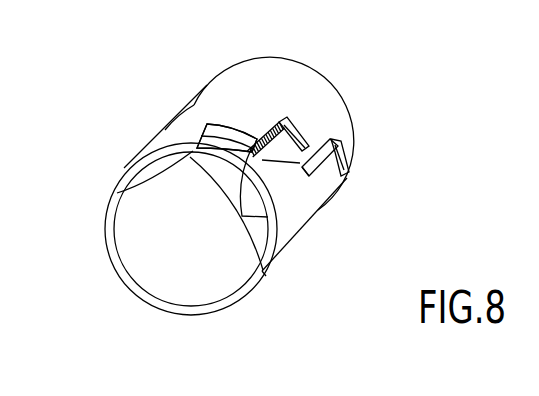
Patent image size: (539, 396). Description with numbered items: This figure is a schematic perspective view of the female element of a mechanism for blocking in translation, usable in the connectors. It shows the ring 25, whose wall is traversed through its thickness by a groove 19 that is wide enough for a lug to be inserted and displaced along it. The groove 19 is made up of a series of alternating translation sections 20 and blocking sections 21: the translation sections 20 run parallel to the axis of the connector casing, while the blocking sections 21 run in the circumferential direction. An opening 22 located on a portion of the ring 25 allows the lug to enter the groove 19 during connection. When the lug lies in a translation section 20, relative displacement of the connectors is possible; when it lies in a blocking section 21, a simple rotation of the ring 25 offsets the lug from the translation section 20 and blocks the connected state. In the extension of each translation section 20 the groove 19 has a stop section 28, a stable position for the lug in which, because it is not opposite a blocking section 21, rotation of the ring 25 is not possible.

The groove 19 is at (207, 127).
The translation section 20 is at (196, 145).
The blocking section 21 is at (237, 140).
The opening 22 is at (150, 189).
The ring 25 is at (299, 239).
The stop section 28 is at (347, 175).